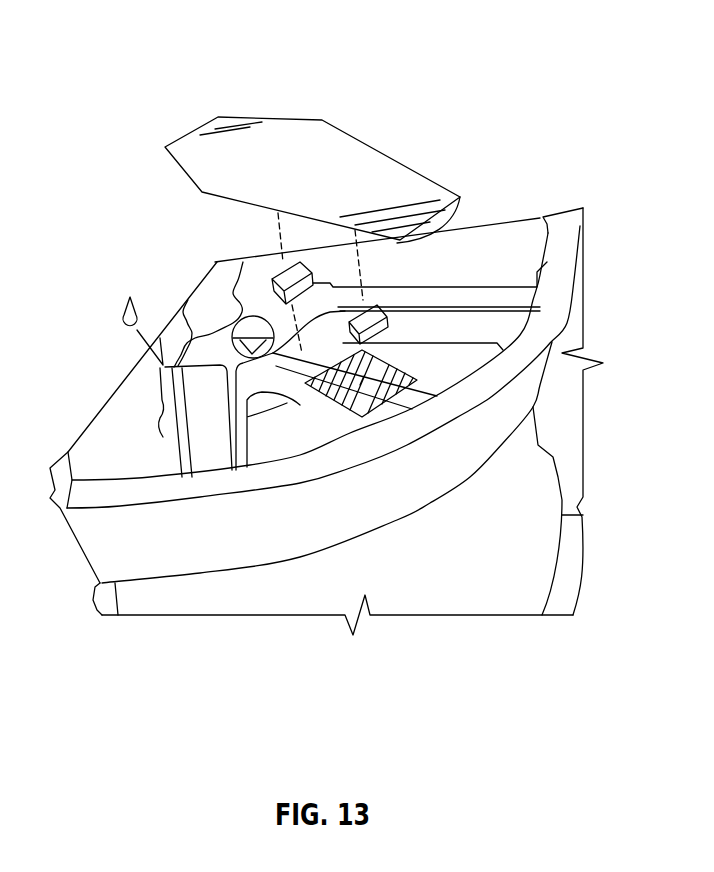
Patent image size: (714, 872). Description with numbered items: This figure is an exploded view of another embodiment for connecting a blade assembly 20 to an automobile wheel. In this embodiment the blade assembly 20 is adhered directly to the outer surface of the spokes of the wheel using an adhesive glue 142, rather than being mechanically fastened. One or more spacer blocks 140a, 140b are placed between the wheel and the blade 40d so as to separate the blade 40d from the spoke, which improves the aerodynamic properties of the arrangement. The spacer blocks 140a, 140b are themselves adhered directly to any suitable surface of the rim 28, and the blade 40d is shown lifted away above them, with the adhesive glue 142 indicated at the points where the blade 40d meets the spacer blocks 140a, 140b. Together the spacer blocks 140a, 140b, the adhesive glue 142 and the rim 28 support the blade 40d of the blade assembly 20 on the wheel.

The blade assembly 20 is at (353, 45).
The rim 28 is at (80, 503).
The blade 40d is at (375, 173).
The spacer block 140a is at (273, 288).
The spacer block 140b is at (423, 300).
The adhesive glue 142 is at (281, 263).